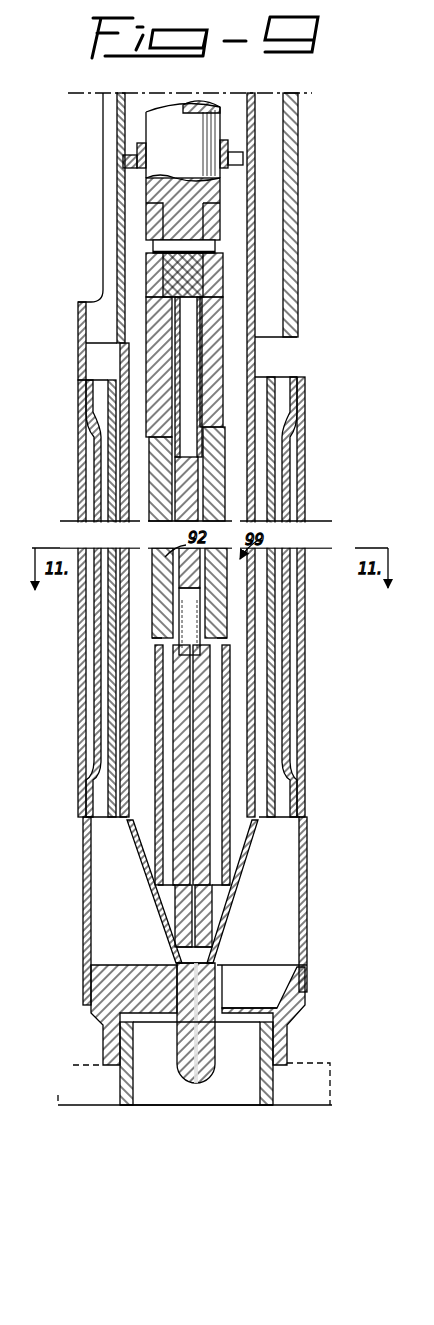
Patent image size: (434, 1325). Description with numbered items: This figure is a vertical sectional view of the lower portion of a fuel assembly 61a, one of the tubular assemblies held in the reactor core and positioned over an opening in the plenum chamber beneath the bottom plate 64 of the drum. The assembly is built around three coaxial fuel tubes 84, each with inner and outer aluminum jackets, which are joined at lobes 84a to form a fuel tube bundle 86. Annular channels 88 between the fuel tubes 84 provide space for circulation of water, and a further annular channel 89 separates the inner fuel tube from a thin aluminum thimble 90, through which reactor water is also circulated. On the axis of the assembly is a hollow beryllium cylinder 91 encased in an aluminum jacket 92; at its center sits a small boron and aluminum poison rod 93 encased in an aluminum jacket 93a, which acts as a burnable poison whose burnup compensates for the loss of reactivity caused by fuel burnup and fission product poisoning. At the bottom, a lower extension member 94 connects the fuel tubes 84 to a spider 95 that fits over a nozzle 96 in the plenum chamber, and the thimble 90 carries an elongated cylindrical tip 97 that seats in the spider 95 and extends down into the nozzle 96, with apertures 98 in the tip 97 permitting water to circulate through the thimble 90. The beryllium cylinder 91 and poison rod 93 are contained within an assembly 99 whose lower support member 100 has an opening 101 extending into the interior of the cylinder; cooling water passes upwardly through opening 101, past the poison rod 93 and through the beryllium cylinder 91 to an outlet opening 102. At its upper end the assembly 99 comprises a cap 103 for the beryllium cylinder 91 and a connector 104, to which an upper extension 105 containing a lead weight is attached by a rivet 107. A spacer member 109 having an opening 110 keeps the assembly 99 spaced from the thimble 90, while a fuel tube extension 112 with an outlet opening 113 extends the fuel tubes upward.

The fuel assembly 61a is at (321, 132).
The bottom plate 64 is at (80, 1105).
The fuel tubes 84 is at (108, 634).
The lobes 84a is at (283, 398).
The fuel tube bundle 86 is at (268, 650).
The annular channels 88 is at (110, 670).
The annular channel 89 is at (120, 698).
The thimble 90 is at (117, 138).
The beryllium cylinder 91 is at (162, 462).
The aluminum jacket 92 is at (165, 557).
The poison rod 93 is at (190, 572).
The aluminum jacket 93a is at (192, 614).
The lower extension member 94 is at (83, 912).
The spider 95 is at (138, 975).
The nozzle 96 is at (134, 1091).
The cylindrical tip 97 is at (210, 1064).
The apertures 98 is at (158, 914).
The assembly 99 is at (262, 538).
The lower support member 100 is at (178, 746).
The opening 101 is at (200, 856).
The outlet opening 102 is at (220, 325).
The cap 103 is at (162, 398).
The connector 104 is at (222, 290).
The upper extension 105 is at (147, 190).
The rivet 107 is at (153, 247).
The spacer member 109 is at (123, 162).
The opening 110 is at (243, 160).
The fuel tube extension 112 is at (298, 224).
The outlet opening 113 is at (88, 300).